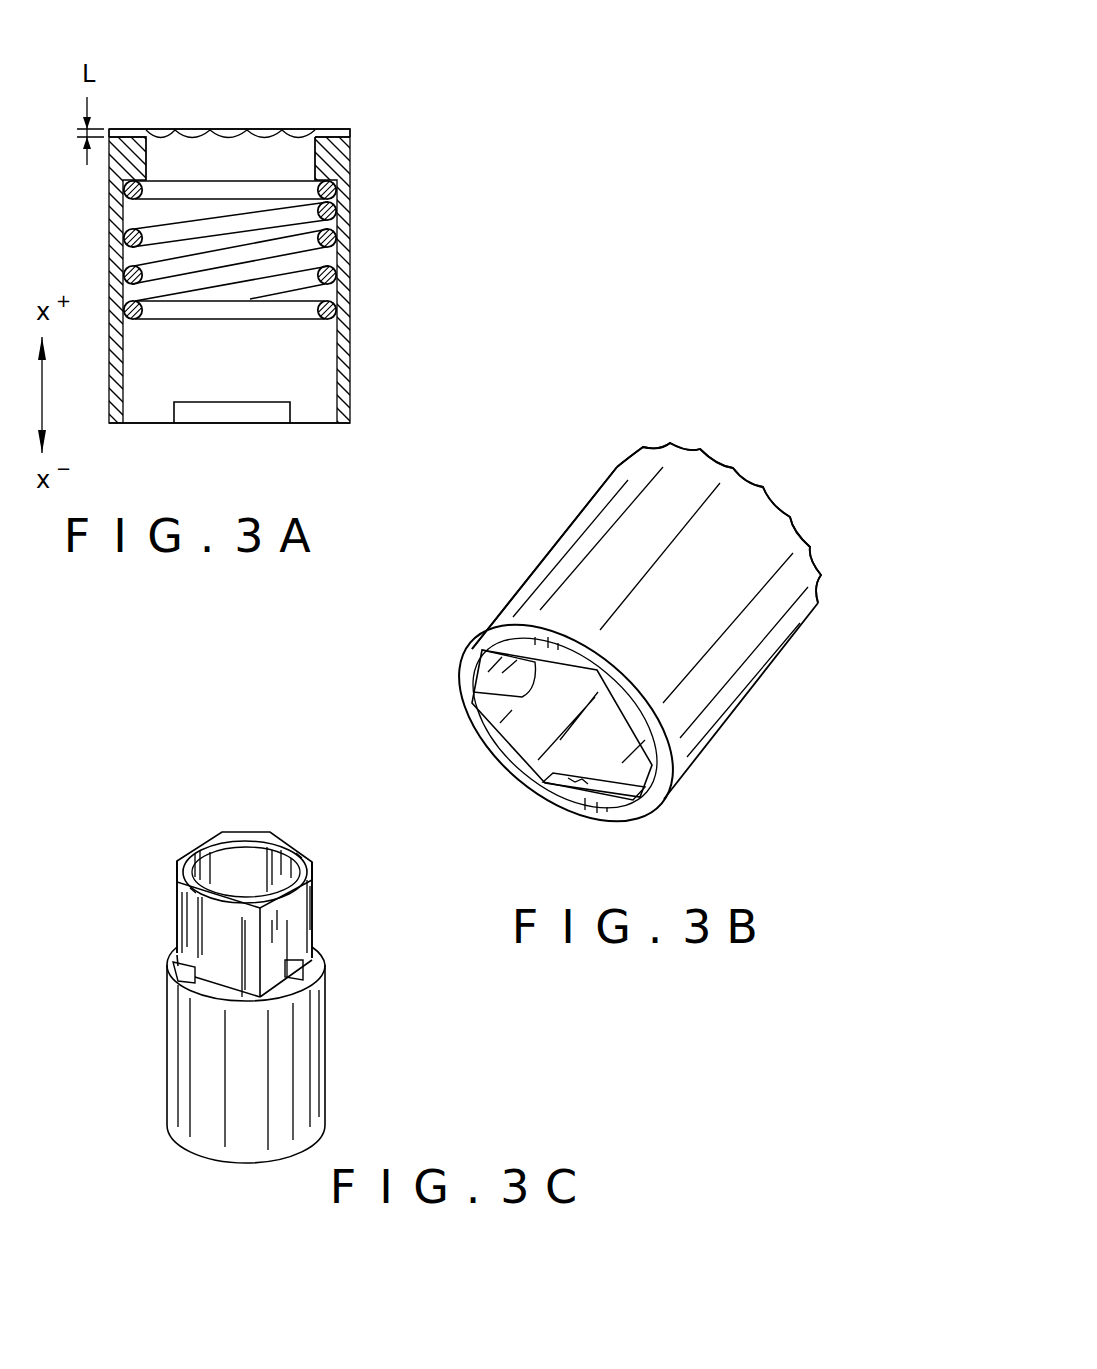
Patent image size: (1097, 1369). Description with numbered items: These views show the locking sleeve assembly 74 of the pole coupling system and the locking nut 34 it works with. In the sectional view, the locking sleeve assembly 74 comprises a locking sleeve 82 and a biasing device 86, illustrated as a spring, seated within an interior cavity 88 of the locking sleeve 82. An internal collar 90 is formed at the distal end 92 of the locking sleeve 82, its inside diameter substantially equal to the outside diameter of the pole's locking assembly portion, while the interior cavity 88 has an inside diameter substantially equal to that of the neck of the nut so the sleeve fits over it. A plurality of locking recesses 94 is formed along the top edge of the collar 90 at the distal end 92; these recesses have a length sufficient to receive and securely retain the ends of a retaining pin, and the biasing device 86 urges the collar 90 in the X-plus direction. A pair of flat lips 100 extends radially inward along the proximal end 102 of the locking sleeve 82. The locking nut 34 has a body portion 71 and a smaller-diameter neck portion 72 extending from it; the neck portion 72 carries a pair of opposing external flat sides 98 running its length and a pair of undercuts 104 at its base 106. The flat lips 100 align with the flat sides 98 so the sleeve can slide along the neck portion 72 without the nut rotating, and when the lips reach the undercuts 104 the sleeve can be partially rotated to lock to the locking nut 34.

In FIG. 3A, the locking sleeve assembly 74 is at (327, 72).
In FIG. 3A, the locking sleeve 82 is at (350, 259).
In FIG. 3B, the locking sleeve 82 is at (555, 517).
In FIG. 3A, the biasing device 86 is at (167, 232).
In FIG. 3A, the interior cavity 88 is at (268, 351).
In FIG. 3A, the internal collar 90 is at (133, 166).
In FIG. 3A, the distal end 92 is at (350, 173).
In FIG. 3B, the distal end 92 is at (620, 467).
In FIG. 3A, the locking recesses 94 is at (279, 129).
In FIG. 3B, the locking recesses 94 is at (797, 533).
In FIG. 3A, the flat lips 100 is at (224, 413).
In FIG. 3B, the flat lips 100 is at (473, 692).
In FIG. 3A, the proximal end 102 is at (352, 405).
In FIG. 3B, the proximal end 102 is at (500, 610).
In FIG. 3C, the locking nut 34 is at (360, 925).
In FIG. 3C, the neck portion 72 is at (190, 930).
In FIG. 3C, the external flat sides 98 is at (190, 848).
In FIG. 3C, the undercuts 104 is at (190, 973).
In FIG. 3C, the base 106 is at (225, 990).
In FIG. 3C, the body portion 71 is at (325, 1050).